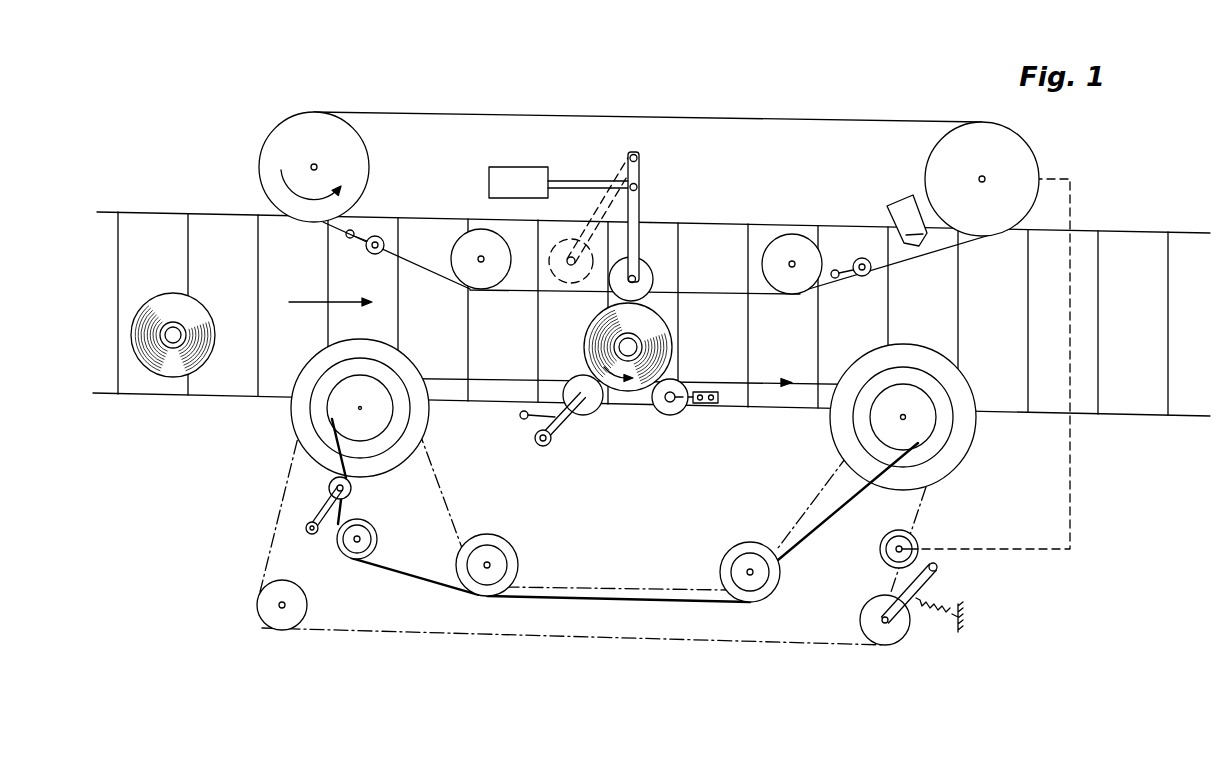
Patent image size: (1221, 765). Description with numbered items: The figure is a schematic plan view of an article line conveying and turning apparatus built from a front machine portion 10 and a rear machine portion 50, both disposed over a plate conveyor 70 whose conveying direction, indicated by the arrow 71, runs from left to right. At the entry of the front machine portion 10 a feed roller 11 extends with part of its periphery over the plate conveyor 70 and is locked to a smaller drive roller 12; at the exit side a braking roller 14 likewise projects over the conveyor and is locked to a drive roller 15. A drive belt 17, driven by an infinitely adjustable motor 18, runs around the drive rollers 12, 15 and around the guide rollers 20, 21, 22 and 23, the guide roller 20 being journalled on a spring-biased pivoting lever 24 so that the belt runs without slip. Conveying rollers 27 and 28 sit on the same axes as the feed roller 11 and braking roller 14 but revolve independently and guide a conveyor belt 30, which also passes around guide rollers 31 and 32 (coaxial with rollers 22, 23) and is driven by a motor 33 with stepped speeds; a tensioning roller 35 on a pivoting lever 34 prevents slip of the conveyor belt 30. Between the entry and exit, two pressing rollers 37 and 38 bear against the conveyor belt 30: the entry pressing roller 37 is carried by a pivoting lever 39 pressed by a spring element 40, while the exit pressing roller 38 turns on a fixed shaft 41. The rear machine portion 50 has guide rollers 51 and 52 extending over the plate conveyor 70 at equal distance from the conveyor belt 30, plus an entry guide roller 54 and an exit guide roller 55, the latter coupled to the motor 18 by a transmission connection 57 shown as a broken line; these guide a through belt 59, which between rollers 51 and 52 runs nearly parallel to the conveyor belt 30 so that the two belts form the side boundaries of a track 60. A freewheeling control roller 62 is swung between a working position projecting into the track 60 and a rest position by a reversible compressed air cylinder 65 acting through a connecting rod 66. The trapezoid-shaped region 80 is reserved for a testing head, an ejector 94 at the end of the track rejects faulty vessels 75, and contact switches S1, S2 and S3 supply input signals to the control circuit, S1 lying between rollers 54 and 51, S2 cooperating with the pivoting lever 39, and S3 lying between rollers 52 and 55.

The front machine portion 10 is at (575, 655).
The feed roller 11 is at (339, 423).
The drive roller 12 is at (373, 452).
The braking roller 14 is at (924, 423).
The drive roller 15 is at (950, 437).
The drive belt 17 is at (722, 644).
The motor 18 is at (912, 537).
The guide roller 20 is at (860, 612).
The guide roller 21 is at (302, 600).
The guide roller 22 is at (506, 567).
The guide roller 23 is at (725, 563).
The pivoting lever 24 is at (936, 570).
The conveying roller 27 is at (388, 437).
The conveying roller 28 is at (925, 424).
The conveyor belt 30 is at (508, 372).
The guide roller 31 is at (752, 542).
The guide roller 32 is at (498, 536).
The motor 33 is at (362, 540).
The pivoting lever 34 is at (308, 506).
The tensioning roller 35 is at (329, 487).
The pressing roller 37 is at (589, 411).
The pressing roller 38 is at (665, 412).
The pivoting lever 39 is at (565, 425).
The spring element 40 is at (535, 435).
The fixed shaft 41 is at (700, 404).
The rear machine portion 50 is at (693, 104).
The guide roller 51 is at (460, 252).
The guide roller 52 is at (812, 257).
The entry guide roller 54 is at (280, 138).
The exit guide roller 55 is at (1010, 147).
The transmission connection 57 is at (1072, 470).
The through belt 59 is at (470, 113).
The track 60 is at (771, 339).
The control roller 62 is at (640, 268).
The reversible compressed air cylinder 65 is at (512, 178).
The connecting rod 66 is at (578, 183).
The plate conveyor 70 is at (270, 285).
The arrow 71 is at (318, 306).
The vessels 75 is at (195, 313).
The trapezoid-shaped region 80 is at (615, 525).
The ejector 94 is at (892, 213).
The contact switch S1 is at (370, 234).
The contact switch S2 is at (520, 415).
The contact switch S3 is at (862, 278).